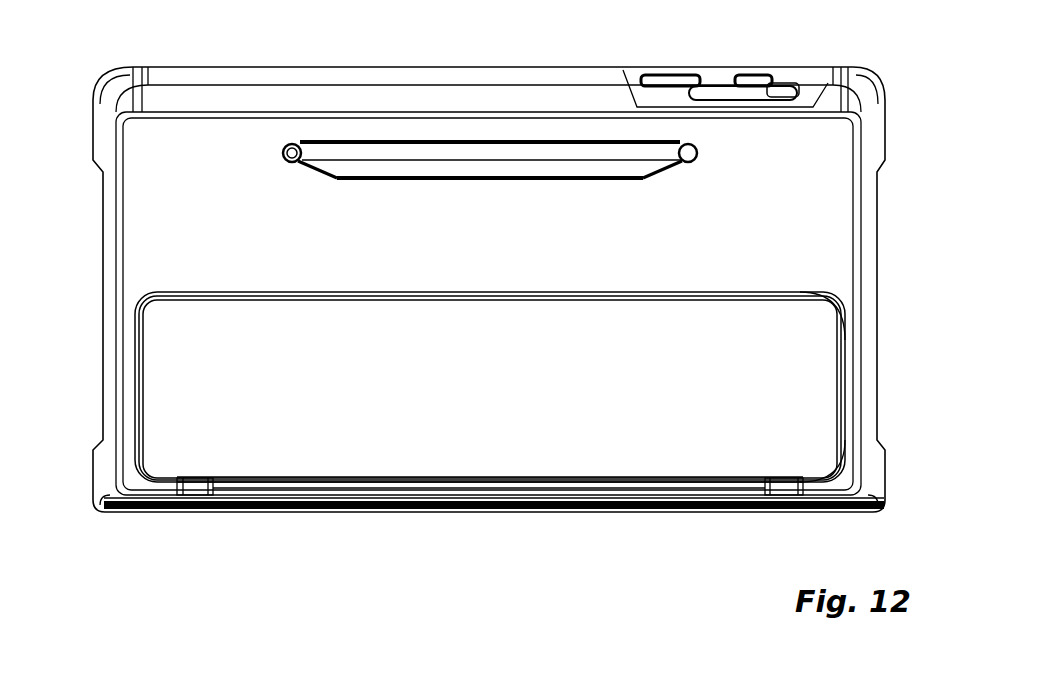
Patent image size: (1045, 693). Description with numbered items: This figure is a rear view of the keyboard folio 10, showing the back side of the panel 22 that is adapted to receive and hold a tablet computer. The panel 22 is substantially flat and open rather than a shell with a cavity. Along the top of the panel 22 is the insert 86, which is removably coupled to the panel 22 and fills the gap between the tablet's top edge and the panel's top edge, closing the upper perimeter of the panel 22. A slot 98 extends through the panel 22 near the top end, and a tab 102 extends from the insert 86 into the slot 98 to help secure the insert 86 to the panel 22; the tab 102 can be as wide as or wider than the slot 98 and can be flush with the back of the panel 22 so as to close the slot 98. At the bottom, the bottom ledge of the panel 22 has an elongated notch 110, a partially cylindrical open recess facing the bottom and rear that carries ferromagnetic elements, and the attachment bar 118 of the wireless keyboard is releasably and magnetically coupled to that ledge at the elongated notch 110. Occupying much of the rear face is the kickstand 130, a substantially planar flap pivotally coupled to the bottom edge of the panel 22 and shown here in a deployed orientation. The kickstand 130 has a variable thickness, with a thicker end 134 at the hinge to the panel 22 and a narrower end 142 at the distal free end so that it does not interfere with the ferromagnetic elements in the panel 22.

The keyboard folio 10 is at (678, 536).
The panel 22 is at (130, 209).
The insert 86 is at (690, 68).
The slot 98 is at (290, 150).
The tab 102 is at (434, 153).
The elongated notch 110 is at (215, 490).
The attachment bar 118 is at (283, 488).
The kickstand 130 is at (187, 384).
The thicker end 134 is at (820, 460).
The narrower end 142 is at (815, 315).